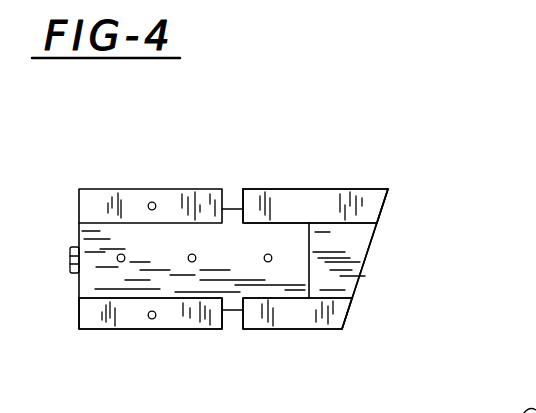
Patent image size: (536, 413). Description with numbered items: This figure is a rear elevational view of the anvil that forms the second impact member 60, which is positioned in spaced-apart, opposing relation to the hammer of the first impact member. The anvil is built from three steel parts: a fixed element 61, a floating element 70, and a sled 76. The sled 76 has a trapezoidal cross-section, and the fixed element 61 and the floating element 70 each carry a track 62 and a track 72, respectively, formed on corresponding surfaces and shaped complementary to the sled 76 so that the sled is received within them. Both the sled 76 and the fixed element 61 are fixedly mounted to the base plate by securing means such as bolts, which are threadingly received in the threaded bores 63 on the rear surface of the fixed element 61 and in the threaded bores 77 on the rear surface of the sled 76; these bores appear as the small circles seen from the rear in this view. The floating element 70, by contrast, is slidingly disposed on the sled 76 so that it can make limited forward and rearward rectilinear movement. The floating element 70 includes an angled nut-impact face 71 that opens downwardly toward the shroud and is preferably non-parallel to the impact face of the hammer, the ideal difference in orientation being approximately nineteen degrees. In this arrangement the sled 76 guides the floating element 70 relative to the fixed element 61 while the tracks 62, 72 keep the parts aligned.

The second impact member 60 is at (222, 136).
The fixed element 61 is at (122, 318).
The track 62 is at (70, 311).
The threaded bores 63 is at (152, 202).
The floating element 70 is at (333, 200).
The nut-impact face 71 is at (367, 316).
The track 72 is at (360, 243).
The sled 76 is at (298, 270).
The threaded bores 77 is at (189, 258).